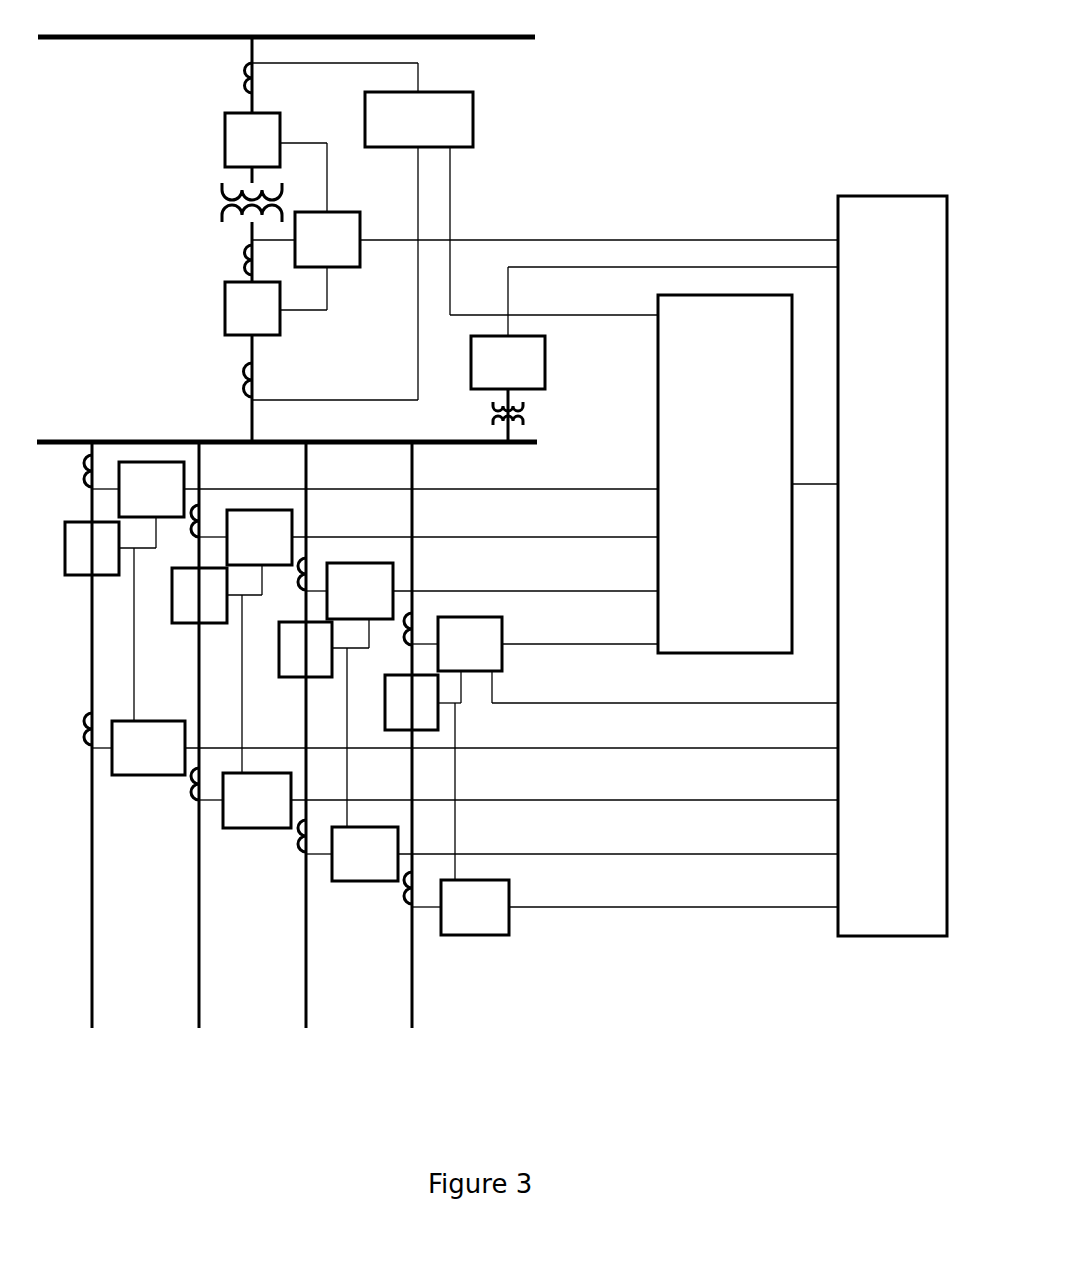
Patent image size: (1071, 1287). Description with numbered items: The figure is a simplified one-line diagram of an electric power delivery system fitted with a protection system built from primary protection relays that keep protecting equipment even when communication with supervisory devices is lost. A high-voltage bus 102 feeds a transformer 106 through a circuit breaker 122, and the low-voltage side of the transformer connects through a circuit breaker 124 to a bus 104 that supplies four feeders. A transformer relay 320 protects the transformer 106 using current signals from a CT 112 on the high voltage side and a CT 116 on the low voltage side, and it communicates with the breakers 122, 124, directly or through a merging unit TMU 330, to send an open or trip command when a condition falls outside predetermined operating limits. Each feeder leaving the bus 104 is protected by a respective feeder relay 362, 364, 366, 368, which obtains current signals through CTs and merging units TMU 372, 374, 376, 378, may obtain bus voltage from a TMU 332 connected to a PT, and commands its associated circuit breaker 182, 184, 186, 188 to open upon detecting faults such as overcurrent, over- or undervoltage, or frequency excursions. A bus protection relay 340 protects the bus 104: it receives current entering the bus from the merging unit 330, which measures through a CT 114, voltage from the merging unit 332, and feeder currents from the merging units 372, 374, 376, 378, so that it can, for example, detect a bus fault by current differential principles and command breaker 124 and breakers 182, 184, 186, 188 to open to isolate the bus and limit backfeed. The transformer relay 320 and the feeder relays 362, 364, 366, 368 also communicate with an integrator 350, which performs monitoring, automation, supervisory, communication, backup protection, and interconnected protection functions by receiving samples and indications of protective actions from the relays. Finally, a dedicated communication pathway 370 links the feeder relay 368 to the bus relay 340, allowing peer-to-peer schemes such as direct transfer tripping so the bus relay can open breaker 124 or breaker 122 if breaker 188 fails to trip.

The bus 102 is at (108, 42).
The bus 104 is at (67, 440).
The transformer 106 is at (222, 200).
The CT 112 is at (244, 86).
The CT 114 is at (246, 266).
The CT 116 is at (246, 374).
The circuit breaker 122 is at (224, 140).
The circuit breaker 124 is at (224, 311).
The circuit breaker 182 is at (79, 577).
The circuit breaker 184 is at (189, 625).
The circuit breaker 186 is at (299, 678).
The circuit breaker 188 is at (454, 720).
The transformer relay 320 is at (455, 75).
The TMU 330 is at (340, 212).
The TMU 332 is at (545, 352).
The bus protection relay 340 is at (888, 196).
The integrator 350 is at (658, 452).
The feeder relay 362 is at (184, 482).
The feeder relay 364 is at (293, 528).
The feeder relay 366 is at (399, 584).
The feeder relay 368 is at (505, 633).
The dedicated communication pathway 370 is at (612, 702).
The TMU 372 is at (147, 776).
The TMU 374 is at (259, 828).
The TMU 376 is at (369, 882).
The TMU 378 is at (484, 935).